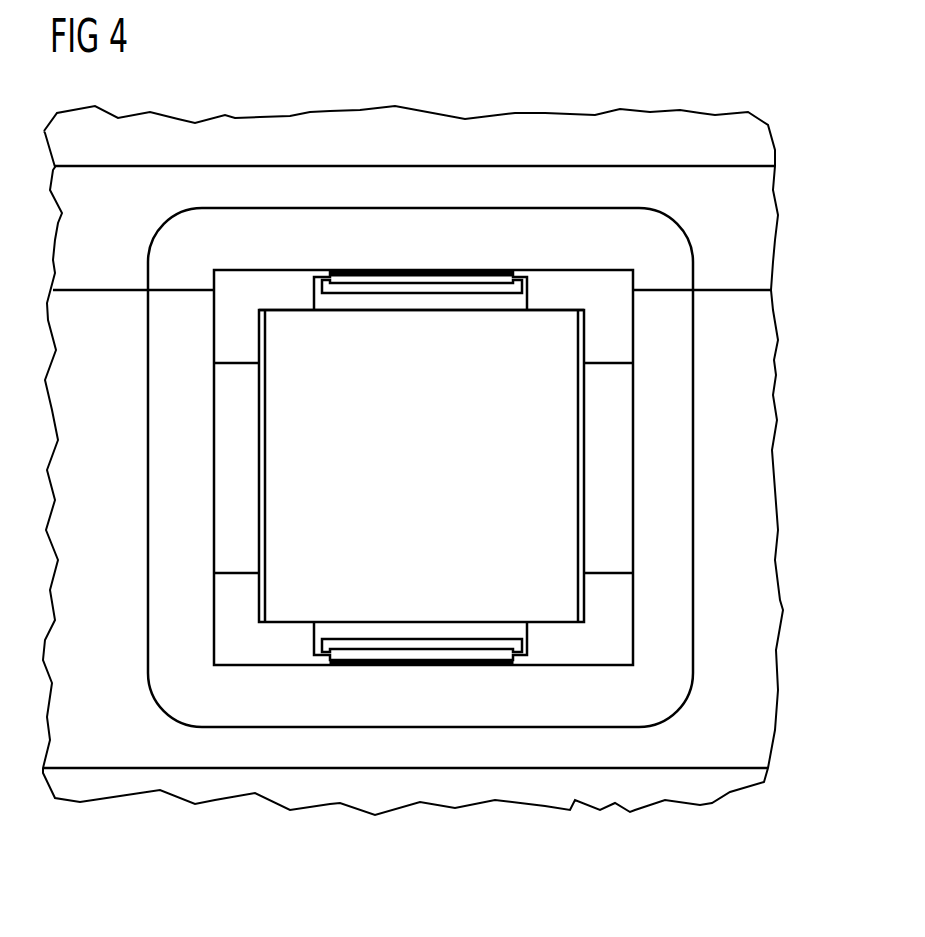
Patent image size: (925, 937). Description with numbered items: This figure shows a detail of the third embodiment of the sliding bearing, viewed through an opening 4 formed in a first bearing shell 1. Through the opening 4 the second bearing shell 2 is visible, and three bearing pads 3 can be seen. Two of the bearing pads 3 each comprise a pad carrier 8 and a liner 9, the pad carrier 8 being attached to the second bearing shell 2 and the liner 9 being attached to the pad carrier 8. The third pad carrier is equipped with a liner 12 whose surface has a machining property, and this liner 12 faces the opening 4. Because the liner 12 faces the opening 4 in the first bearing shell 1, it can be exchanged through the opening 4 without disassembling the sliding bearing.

The first bearing shell 1 is at (765, 448).
The second bearing shell 2 is at (622, 482).
The bearing pad 3 is at (263, 453).
The opening 4 is at (633, 415).
The pad carrier 8 is at (487, 302).
The liner 9 is at (429, 285).
The liner with a surface with a machining property 12 is at (557, 320).